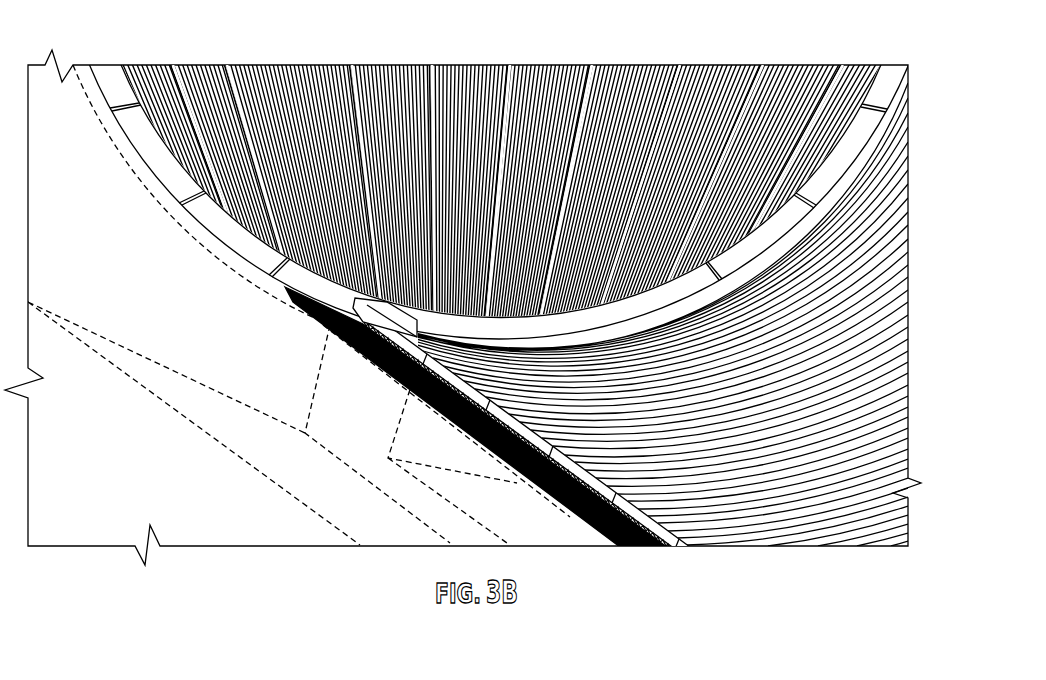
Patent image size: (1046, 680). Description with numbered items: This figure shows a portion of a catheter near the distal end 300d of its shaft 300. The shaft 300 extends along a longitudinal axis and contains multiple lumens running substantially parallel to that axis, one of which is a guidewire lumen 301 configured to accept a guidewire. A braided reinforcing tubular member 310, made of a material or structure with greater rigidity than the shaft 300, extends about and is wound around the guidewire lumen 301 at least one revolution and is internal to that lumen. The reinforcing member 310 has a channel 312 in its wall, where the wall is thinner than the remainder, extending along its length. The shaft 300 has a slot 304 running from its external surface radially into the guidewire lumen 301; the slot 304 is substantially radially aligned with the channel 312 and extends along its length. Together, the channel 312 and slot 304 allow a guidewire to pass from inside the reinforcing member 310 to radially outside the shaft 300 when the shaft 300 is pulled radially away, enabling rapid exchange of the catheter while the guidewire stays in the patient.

The shaft 300 is at (315, 502).
The distal end 300d is at (122, 330).
The guidewire lumen 301 is at (88, 78).
The slot 304 is at (358, 427).
The braided reinforcing tubular member 310 is at (333, 80).
The channel 312 is at (390, 313).